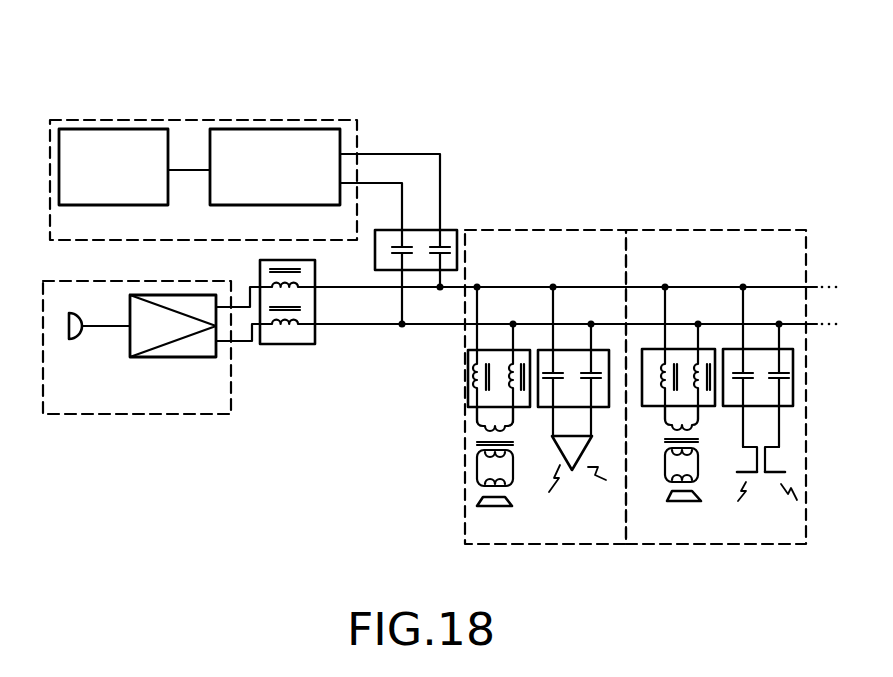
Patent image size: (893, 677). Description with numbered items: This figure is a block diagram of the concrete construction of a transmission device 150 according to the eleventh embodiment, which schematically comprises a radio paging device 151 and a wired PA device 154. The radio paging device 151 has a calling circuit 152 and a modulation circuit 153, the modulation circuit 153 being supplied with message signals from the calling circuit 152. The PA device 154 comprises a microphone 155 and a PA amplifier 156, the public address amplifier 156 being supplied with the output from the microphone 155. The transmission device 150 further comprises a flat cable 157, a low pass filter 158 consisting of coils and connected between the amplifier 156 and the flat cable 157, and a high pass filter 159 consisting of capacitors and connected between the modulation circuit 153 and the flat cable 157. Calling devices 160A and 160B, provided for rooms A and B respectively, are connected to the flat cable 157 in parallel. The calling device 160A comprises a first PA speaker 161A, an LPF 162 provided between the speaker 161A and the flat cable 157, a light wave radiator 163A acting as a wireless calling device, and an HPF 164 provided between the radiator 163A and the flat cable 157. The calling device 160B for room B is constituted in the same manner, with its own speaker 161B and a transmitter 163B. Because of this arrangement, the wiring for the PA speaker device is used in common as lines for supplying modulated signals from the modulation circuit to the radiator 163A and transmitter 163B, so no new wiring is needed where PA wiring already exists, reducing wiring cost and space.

The transmission device 150 is at (607, 127).
The radio paging device 151 is at (240, 120).
The calling circuit 152 is at (127, 129).
The modulation circuit 153 is at (318, 129).
The PA device 154 is at (127, 414).
The microphone 155 is at (74, 339).
The PA amplifier 156 is at (192, 357).
The flat cable 157 is at (340, 289).
The low pass filter 158 is at (290, 345).
The high pass filter 159 is at (452, 230).
The calling device 160A is at (465, 477).
The calling device 160B is at (806, 443).
The first PA speaker 161A is at (495, 545).
The PA speaker 161B is at (681, 541).
The LPF 162 is at (468, 382).
The light wave radiator 163A is at (572, 472).
The transmitter 163B is at (766, 480).
The HPF 164 is at (572, 350).